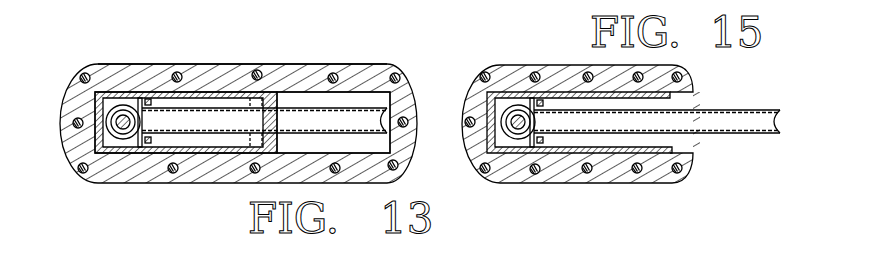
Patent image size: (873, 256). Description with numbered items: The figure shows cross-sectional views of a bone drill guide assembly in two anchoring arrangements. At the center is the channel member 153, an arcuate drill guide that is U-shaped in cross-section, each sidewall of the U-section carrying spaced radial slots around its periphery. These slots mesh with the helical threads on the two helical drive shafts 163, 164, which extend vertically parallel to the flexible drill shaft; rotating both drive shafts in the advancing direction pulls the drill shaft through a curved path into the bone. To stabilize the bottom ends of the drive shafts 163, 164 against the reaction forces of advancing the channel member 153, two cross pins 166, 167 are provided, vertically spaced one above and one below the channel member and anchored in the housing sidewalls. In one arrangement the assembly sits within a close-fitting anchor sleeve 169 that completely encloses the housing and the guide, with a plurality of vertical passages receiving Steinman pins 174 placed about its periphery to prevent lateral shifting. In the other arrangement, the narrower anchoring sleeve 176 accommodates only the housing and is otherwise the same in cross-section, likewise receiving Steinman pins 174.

In FIG. 13, the channel member 153 is at (307, 108).
In FIG. 15, the channel member 153 is at (718, 110).
In FIG. 13, the helical drive shaft 163 is at (105, 153).
In FIG. 15, the helical drive shaft 163 is at (518, 153).
In FIG. 13, the helical drive shaft 164 is at (150, 99).
In FIG. 15, the helical drive shaft 164 is at (541, 99).
In FIG. 13, the cross pin 166 is at (138, 98).
In FIG. 15, the cross pin 166 is at (531, 98).
In FIG. 13, the cross pin 167 is at (150, 143).
In FIG. 15, the cross pin 167 is at (545, 143).
In FIG. 13, the anchor sleeve 169 is at (222, 64).
In FIG. 13, the Steinman pins 174 is at (91, 66).
In FIG. 15, the Steinman pins 174 is at (484, 72).
In FIG. 15, the anchoring sleeve 176 is at (616, 184).